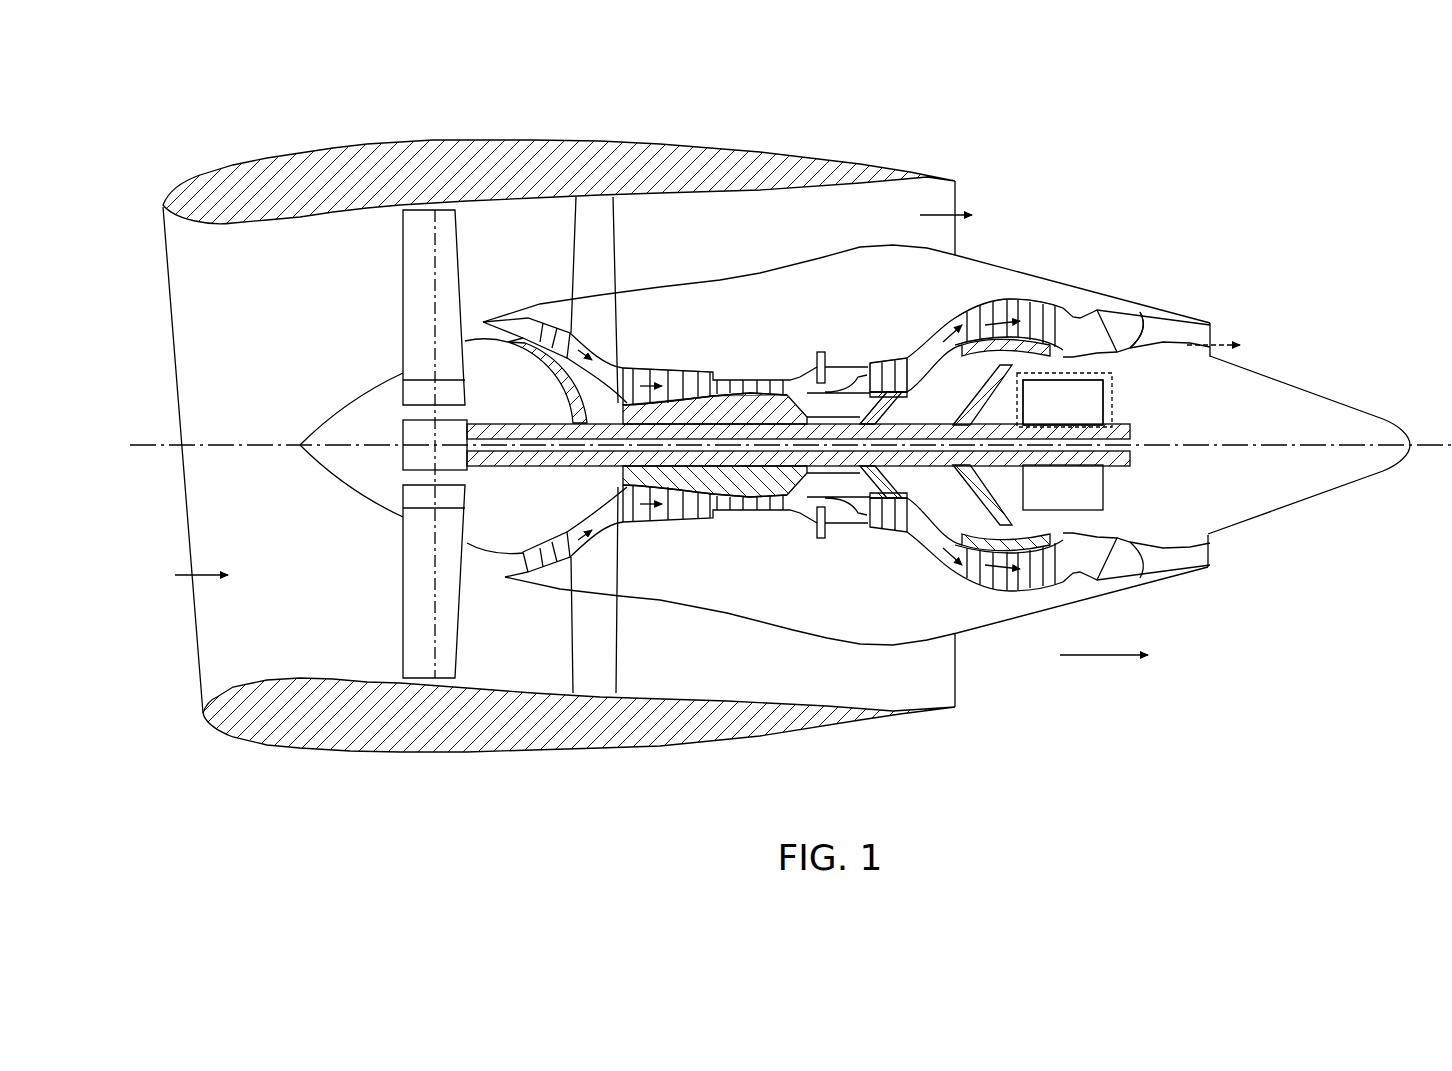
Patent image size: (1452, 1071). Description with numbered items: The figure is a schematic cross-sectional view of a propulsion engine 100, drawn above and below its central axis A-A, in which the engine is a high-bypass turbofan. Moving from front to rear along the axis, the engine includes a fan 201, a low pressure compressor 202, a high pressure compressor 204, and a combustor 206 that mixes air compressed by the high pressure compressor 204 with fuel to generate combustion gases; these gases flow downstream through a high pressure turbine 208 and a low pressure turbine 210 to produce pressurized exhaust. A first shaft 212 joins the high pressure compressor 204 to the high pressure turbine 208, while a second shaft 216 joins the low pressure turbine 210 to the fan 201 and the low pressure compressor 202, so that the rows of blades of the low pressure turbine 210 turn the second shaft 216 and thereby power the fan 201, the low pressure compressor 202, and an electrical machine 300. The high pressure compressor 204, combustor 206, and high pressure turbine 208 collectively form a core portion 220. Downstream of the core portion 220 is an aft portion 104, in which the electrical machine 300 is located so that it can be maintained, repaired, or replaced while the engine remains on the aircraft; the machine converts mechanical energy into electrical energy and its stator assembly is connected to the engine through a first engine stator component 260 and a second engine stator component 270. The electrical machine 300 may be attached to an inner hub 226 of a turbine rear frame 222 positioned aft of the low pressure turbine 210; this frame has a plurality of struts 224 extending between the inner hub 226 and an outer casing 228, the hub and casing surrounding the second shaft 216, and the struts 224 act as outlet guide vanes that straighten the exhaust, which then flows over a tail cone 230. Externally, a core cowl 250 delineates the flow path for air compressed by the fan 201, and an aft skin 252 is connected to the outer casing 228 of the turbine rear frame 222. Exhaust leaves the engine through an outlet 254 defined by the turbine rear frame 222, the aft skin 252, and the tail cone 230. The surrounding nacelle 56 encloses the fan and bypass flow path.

The propulsion engine 100 is at (188, 126).
The nacelle 56 is at (810, 156).
The aft portion 104 is at (1250, 218).
The fan 201 is at (415, 292).
The low pressure compressor 202 is at (500, 318).
The high pressure compressor 204 is at (702, 372).
The combustor 206 is at (810, 366).
The high pressure turbine 208 is at (880, 362).
The low pressure turbine 210 is at (962, 330).
The first shaft 212 is at (880, 402).
The second shaft 216 is at (1135, 432).
The core portion 220 is at (810, 535).
The turbine rear frame 222 is at (1082, 312).
The struts 224 is at (1140, 314).
The inner hub 226 is at (1095, 537).
The outer casing 228 is at (1083, 578).
The tail cone 230 is at (1345, 407).
The core cowl 250 is at (1008, 262).
The aft skin 252 is at (1188, 322).
The outlet 254 is at (1215, 333).
The first engine stator component 260 is at (1098, 306).
The second engine stator component 270 is at (1103, 658).
The electrical machine 300 is at (1122, 410).
The central axis A is at (1426, 444).